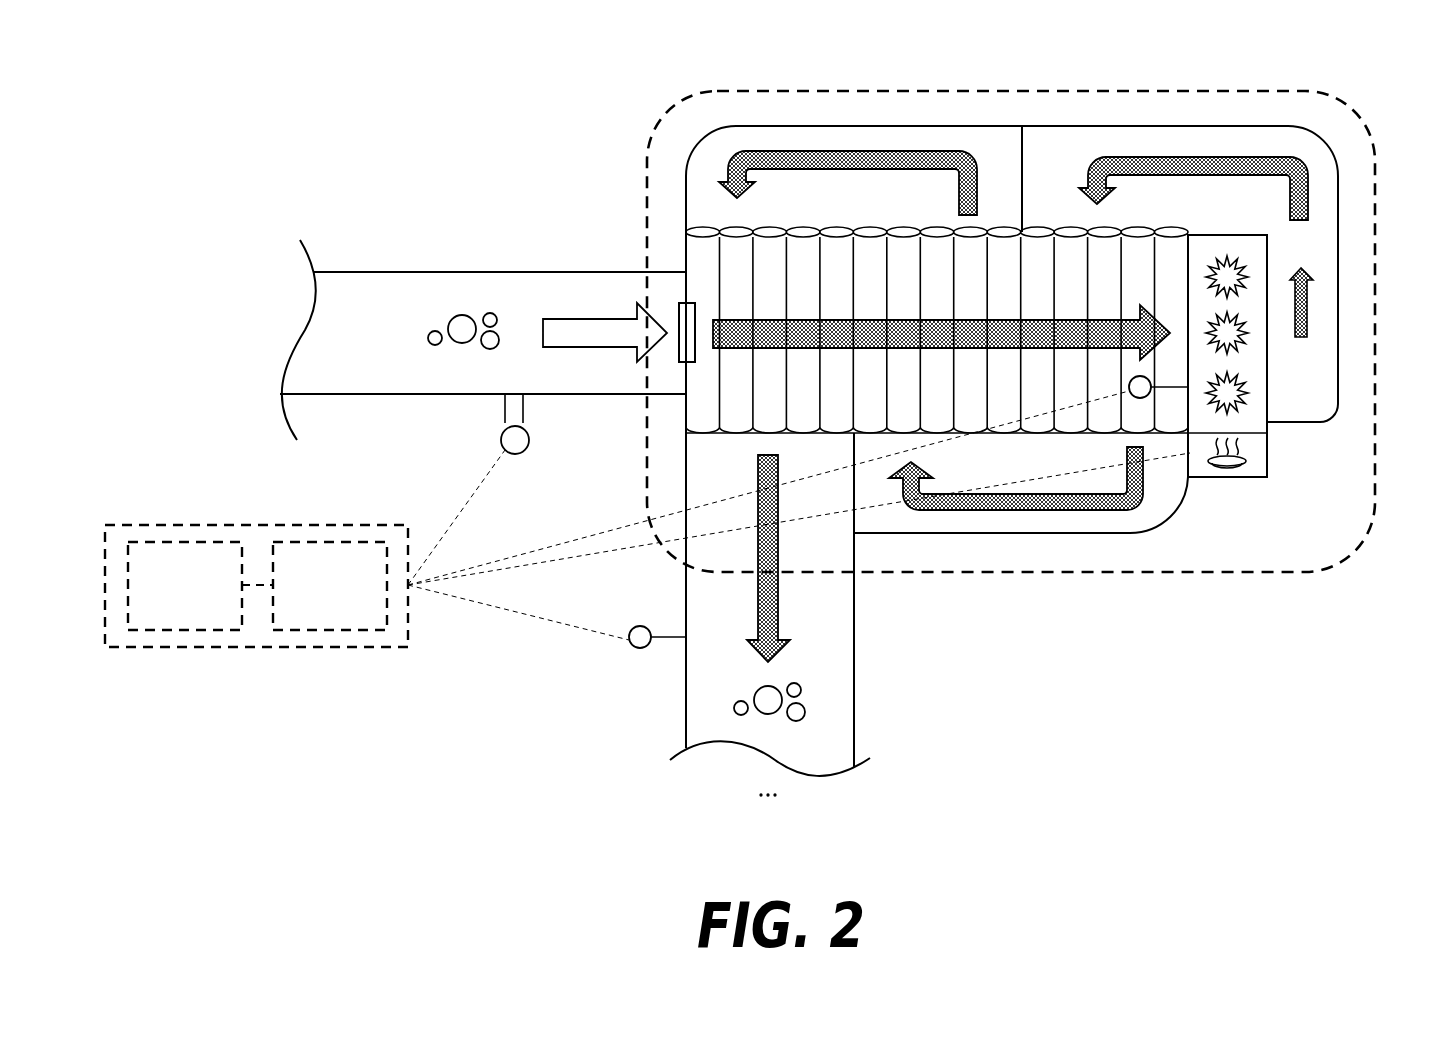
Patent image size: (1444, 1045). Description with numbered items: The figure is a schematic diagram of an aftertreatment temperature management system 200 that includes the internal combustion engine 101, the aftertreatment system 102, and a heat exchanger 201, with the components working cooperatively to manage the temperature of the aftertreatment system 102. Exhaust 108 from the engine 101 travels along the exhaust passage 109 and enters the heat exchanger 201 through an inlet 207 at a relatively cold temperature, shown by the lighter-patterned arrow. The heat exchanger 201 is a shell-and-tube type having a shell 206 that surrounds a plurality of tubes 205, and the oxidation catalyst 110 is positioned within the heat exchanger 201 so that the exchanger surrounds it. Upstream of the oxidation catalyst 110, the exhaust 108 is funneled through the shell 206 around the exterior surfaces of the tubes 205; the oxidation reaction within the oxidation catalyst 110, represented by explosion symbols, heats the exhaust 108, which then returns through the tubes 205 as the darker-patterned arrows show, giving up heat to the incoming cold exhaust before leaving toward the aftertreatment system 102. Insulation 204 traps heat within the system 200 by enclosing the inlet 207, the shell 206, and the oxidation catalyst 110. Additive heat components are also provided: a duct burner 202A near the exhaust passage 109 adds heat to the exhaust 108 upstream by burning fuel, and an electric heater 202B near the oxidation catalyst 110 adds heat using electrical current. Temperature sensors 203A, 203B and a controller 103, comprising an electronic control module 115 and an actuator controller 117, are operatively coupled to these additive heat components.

The aftertreatment temperature management system 200 is at (594, 110).
The heat exchanger 201 is at (1350, 307).
The internal combustion engine 101 is at (440, 340).
The aftertreatment system 102 is at (770, 634).
The controller 103 is at (237, 525).
The exhaust 108 is at (463, 301).
The exhaust passage 109 is at (414, 270).
The oxidation catalyst 110 is at (1267, 385).
The electronic control module 115 is at (185, 586).
The actuator controller 117 is at (330, 586).
The additive heat component 202A is at (502, 443).
The additive heat component 202B is at (1267, 453).
The temperature sensor 203A is at (1141, 398).
The temperature sensor 203B is at (640, 648).
The insulation 204 is at (1010, 572).
The tubes 205 is at (803, 232).
The shell 206 is at (1071, 126).
The inlet 207 is at (679, 320).